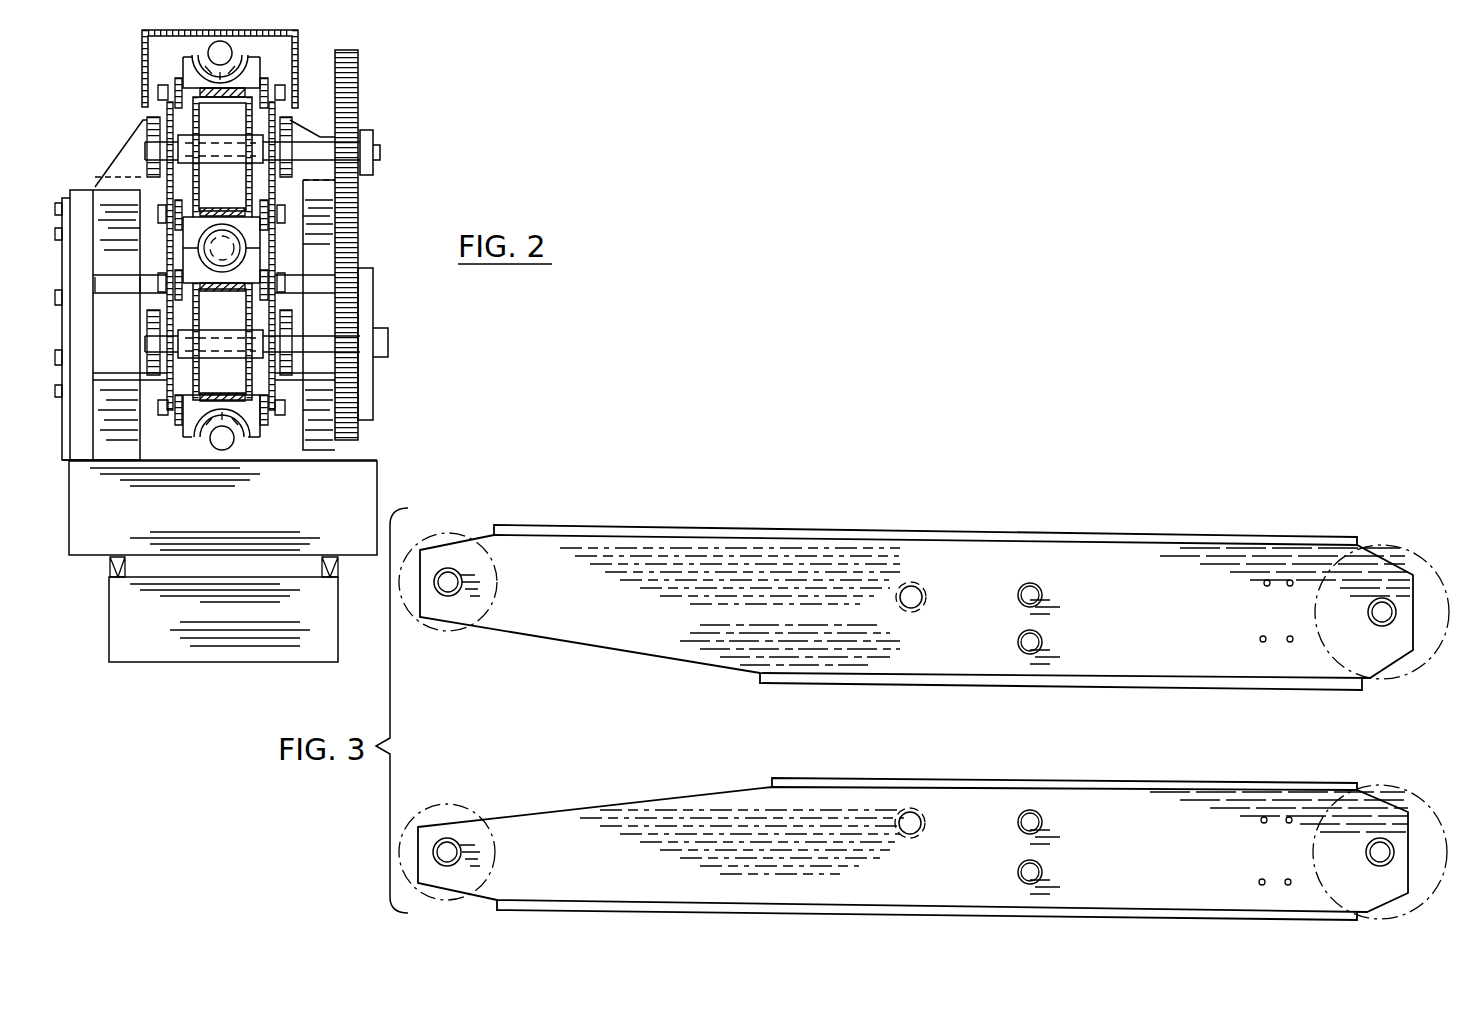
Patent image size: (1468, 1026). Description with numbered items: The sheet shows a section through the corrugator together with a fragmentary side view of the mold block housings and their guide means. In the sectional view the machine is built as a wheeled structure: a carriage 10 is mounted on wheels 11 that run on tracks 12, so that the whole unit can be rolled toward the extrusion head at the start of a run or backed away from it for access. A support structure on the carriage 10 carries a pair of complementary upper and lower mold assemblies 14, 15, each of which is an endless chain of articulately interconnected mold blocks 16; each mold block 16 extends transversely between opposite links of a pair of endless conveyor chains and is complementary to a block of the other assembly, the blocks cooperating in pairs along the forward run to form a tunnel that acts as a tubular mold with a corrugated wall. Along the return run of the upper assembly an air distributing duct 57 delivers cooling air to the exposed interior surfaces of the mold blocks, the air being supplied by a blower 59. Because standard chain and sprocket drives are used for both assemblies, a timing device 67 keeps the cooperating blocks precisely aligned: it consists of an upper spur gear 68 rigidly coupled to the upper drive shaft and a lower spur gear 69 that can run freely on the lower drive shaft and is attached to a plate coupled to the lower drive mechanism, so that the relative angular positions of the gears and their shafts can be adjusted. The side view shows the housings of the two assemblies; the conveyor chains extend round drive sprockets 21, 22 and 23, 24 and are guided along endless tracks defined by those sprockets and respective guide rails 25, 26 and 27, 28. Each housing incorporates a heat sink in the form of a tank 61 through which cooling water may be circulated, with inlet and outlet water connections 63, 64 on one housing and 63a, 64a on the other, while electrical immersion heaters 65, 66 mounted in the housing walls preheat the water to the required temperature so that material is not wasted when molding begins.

In FIG. 2, the carriage 10 is at (219, 507).
In FIG. 2, the wheels 11 is at (110, 574).
In FIG. 2, the tracks 12 is at (322, 582).
In FIG. 2, the upper mold assembly 14 is at (148, 107).
In FIG. 2, the lower mold assembly 15 is at (178, 420).
In FIG. 2, the mold block 16 is at (248, 266).
In FIG. 2, the air distributing duct 57 is at (208, 50).
In FIG. 2, the blower 59 is at (236, 438).
In FIG. 2, the timing device 67 is at (150, 328).
In FIG. 2, the upper spur gear 68 is at (358, 196).
In FIG. 2, the lower spur gear 69 is at (358, 311).
In FIG. 3, the drive sprocket 21 is at (425, 548).
In FIG. 3, the drive sprocket 22 is at (1405, 548).
In FIG. 3, the drive sprocket 23 is at (441, 903).
In FIG. 3, the drive sprocket 24 is at (1413, 910).
In FIG. 3, the guide rail 25 is at (605, 532).
In FIG. 3, the guide rail 26 is at (905, 688).
In FIG. 3, the guide rail 27 is at (908, 780).
In FIG. 3, the guide rail 28 is at (698, 918).
In FIG. 3, the tank 61 is at (840, 612).
In FIG. 3, the inlet water connection 63 is at (1040, 633).
In FIG. 3, the outlet water connection 64 is at (1033, 583).
In FIG. 3, the electrical immersion heater 65 is at (903, 588).
In FIG. 3, the electrical immersion heater 66 is at (903, 833).
In FIG. 3, the inlet water connection 63a is at (1038, 838).
In FIG. 3, the outlet water connection 64a is at (1025, 884).